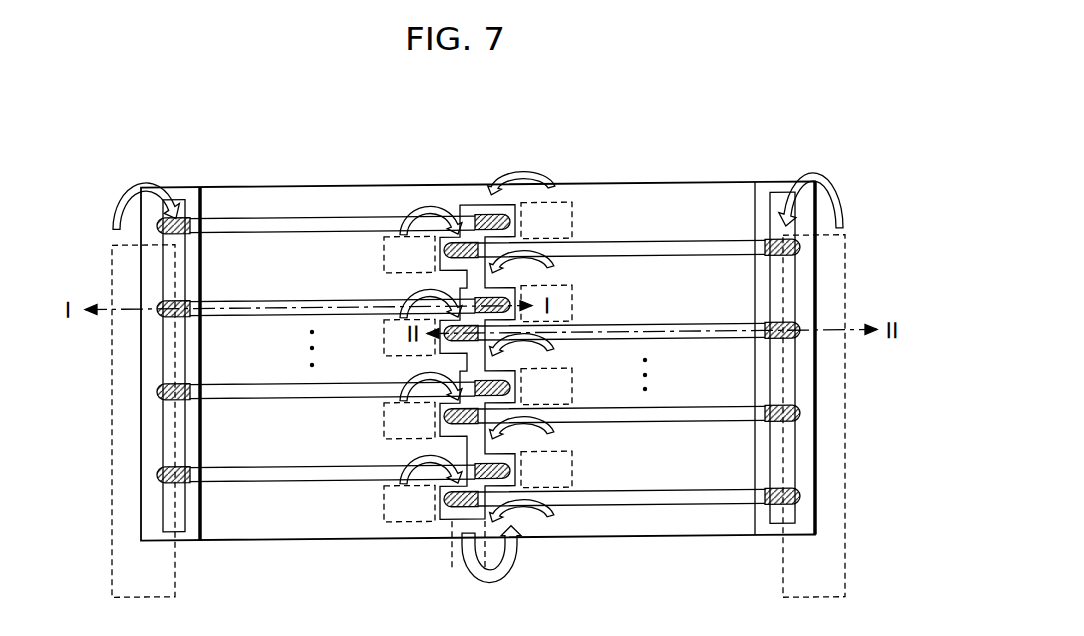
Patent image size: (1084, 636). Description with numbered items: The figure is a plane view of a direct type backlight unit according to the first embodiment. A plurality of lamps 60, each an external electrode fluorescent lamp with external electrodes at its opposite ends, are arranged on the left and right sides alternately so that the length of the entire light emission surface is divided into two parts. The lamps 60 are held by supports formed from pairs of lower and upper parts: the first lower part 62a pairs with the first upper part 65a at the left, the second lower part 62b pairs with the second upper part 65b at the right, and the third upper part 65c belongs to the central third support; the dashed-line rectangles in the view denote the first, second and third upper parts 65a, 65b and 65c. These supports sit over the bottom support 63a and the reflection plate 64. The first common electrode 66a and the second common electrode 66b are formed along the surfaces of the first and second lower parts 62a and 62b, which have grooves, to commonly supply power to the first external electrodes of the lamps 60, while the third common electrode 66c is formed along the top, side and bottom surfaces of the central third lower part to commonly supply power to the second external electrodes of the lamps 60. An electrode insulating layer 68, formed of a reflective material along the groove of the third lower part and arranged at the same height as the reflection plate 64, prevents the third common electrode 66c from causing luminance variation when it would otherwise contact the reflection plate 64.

The lamps 60 is at (283, 225).
The first lower part 62a is at (196, 540).
The second lower part 62b is at (765, 531).
The bottom support 63a is at (716, 335).
The reflection plate 64 is at (665, 277).
The first upper part 65a is at (112, 577).
The second upper part 65b is at (845, 575).
The third upper part 65c is at (568, 201).
The first common electrode 66a is at (176, 195).
The second common electrode 66b is at (777, 195).
The third common electrode 66c is at (477, 443).
The electrode insulating layer 68 is at (452, 563).